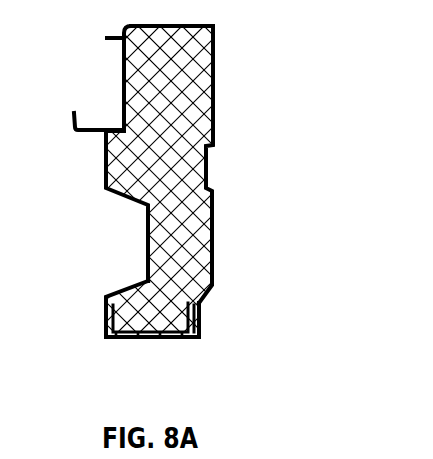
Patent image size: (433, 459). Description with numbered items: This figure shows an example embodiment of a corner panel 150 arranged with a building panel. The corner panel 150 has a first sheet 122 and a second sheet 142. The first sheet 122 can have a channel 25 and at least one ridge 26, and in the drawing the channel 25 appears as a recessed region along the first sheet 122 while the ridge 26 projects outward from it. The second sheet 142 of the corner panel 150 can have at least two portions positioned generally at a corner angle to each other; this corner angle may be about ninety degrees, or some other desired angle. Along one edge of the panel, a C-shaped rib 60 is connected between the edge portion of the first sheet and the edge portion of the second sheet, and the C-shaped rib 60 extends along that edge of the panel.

The corner panel 150 is at (225, 260).
The second sheet 142 is at (215, 102).
The ridge 26 is at (105, 163).
The channel 25 is at (138, 265).
The first sheet 122 is at (107, 322).
The C-shaped rib 60 is at (150, 338).